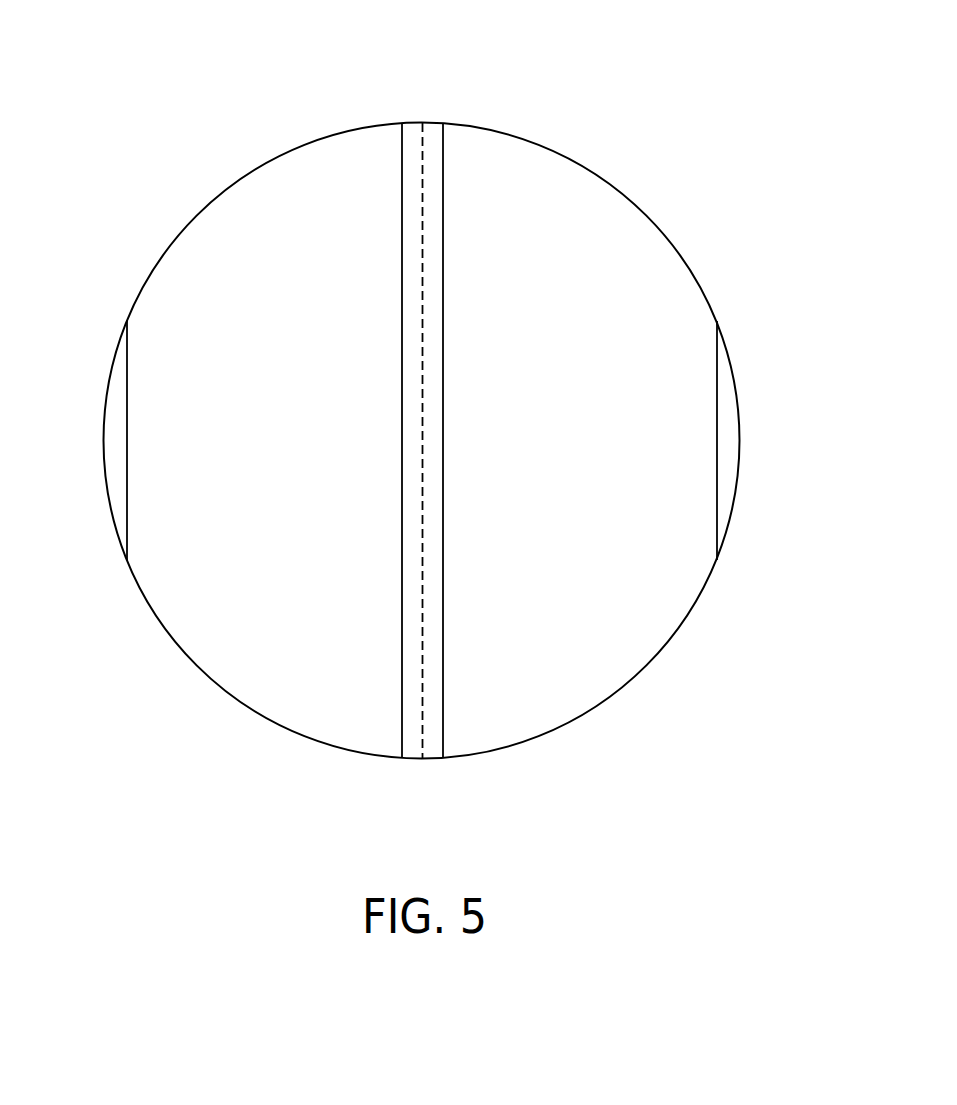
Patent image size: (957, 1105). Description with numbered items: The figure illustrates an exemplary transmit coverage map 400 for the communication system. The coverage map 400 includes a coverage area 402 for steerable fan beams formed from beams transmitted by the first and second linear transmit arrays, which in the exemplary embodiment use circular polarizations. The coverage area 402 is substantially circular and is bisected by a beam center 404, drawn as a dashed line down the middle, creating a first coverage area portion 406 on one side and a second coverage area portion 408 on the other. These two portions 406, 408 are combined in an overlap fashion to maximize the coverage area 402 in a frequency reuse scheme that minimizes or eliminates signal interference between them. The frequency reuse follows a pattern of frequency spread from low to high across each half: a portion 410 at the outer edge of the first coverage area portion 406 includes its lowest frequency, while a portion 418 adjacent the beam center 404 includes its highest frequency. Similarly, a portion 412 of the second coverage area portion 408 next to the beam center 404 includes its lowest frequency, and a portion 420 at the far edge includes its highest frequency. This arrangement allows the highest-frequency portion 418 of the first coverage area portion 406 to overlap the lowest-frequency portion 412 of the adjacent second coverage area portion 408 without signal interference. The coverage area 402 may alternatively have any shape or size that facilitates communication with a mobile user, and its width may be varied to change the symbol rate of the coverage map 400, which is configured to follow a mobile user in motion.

The transmit coverage map 400 is at (420, 382).
The coverage area 402 is at (602, 178).
The beam center 404 is at (425, 148).
The first coverage area portion 406 is at (310, 350).
The second coverage area portion 408 is at (594, 544).
The portion of first coverage area 410 is at (118, 422).
The portion of second coverage area 412 is at (435, 313).
The portion of first coverage area 418 is at (408, 600).
The portion of second coverage area 420 is at (725, 436).